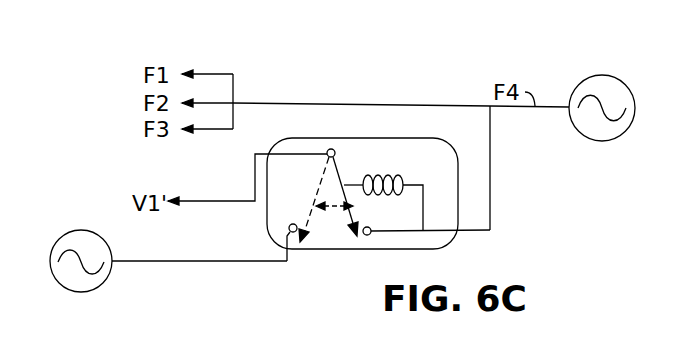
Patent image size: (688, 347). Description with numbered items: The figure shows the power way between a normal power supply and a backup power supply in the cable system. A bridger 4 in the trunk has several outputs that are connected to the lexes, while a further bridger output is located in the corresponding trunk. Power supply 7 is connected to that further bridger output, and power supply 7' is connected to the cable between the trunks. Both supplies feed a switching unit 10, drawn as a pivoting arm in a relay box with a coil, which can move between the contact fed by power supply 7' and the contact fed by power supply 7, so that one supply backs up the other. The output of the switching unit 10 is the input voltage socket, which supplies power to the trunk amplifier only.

The bridger 4 is at (235, 98).
The switching unit 10 is at (233, 198).
The power supply 7 is at (587, 106).
The power supply 7' is at (168, 248).